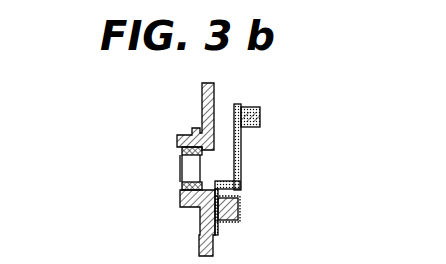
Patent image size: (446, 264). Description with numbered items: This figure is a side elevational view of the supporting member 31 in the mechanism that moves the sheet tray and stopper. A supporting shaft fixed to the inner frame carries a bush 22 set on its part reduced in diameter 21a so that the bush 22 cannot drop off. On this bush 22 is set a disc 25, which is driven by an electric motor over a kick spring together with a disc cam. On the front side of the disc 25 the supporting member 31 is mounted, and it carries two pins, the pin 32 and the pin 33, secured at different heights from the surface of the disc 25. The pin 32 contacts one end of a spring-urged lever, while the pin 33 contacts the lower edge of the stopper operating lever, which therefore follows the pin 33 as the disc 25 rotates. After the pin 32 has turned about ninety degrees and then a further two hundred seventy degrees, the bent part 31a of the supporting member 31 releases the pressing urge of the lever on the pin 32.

The disc 25 is at (202, 99).
The bush 22 is at (182, 185).
The part reduced in diameter 21a is at (190, 167).
The supporting member 31 is at (241, 155).
The pin 33 is at (260, 115).
The bent part 31a is at (228, 190).
The pin 32 is at (238, 213).